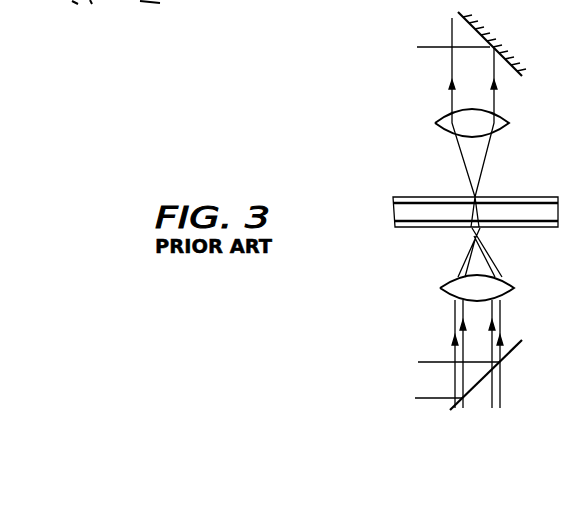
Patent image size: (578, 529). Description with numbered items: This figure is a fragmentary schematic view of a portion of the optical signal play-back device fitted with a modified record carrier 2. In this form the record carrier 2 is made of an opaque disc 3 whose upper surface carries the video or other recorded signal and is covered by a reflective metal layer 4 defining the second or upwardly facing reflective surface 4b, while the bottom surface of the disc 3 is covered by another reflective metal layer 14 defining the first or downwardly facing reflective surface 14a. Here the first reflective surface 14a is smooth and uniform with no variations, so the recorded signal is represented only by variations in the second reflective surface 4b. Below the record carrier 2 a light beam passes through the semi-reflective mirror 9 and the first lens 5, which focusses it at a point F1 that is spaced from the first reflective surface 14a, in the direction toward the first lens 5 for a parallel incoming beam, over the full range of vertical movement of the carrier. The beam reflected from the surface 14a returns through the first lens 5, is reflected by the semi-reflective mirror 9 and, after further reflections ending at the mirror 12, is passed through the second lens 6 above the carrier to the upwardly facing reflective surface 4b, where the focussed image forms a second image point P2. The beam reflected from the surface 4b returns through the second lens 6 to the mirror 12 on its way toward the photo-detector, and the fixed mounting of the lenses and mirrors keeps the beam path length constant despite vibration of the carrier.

The mirror 12 is at (510, 70).
The second lens 6 is at (509, 123).
The second image point P2 is at (452, 180).
The record carrier 2 is at (356, 272).
The reflective metal layer 4 is at (405, 205).
The second reflective surface 4b is at (411, 193).
The disc 3 is at (413, 216).
The reflective metal layer 14 is at (422, 229).
The first reflective surface 14a is at (447, 231).
The focal point F1 is at (473, 240).
The first lens 5 is at (514, 288).
The semi-reflective mirror 9 is at (518, 343).